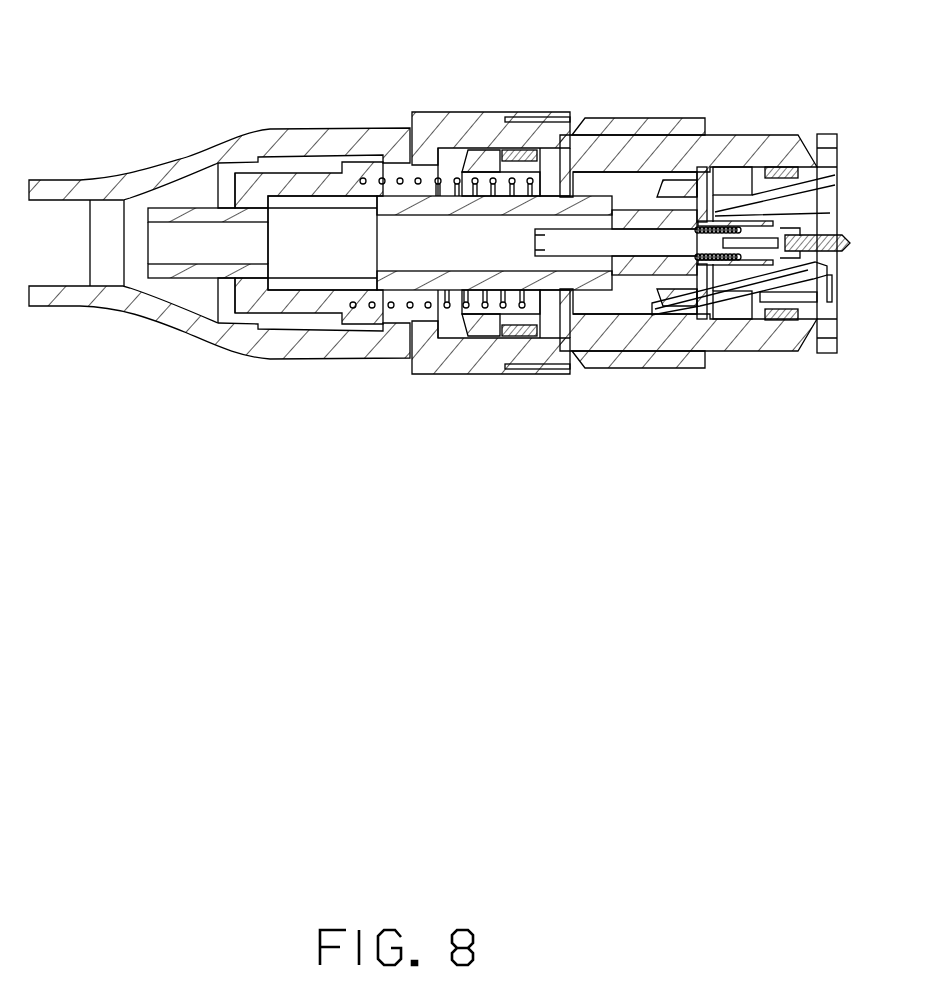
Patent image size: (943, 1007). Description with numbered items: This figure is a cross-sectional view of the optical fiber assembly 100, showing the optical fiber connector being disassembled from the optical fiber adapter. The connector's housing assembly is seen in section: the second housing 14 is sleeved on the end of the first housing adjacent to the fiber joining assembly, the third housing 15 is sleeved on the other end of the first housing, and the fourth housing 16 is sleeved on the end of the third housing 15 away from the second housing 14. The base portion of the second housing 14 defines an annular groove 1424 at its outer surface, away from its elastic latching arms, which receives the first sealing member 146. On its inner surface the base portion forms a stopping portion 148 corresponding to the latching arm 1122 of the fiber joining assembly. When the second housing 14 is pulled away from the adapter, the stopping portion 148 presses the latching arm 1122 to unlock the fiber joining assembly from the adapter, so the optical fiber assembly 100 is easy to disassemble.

The optical fiber assembly 100 is at (157, 70).
The fourth housing 16 is at (265, 343).
The third housing 15 is at (433, 348).
The first sealing member 146 is at (504, 337).
The annular groove 1424 is at (526, 336).
The latching arm 1122 is at (652, 304).
The stopping portion 148 is at (711, 302).
The second housing 14 is at (773, 333).